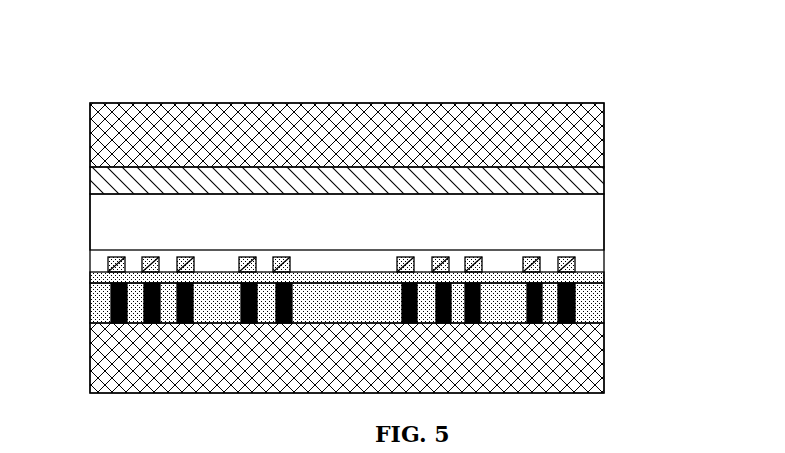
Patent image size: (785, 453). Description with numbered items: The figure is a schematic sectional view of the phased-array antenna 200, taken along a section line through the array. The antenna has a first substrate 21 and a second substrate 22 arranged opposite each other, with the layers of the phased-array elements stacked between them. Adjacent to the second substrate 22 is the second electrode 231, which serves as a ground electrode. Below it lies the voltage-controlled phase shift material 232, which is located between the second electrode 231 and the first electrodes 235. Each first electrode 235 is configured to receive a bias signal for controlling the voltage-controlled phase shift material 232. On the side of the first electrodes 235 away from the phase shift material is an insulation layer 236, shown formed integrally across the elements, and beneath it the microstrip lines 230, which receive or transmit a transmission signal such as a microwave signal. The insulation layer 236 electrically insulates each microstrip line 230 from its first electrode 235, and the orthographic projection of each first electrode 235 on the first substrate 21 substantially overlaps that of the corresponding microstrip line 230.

The phased-array antenna 200 is at (74, 83).
The second substrate 22 is at (604, 135).
The second electrode 231 is at (604, 179).
The voltage-controlled phase shift material 232 is at (604, 225).
The first electrode 235 is at (575, 264).
The insulation layer 236 is at (597, 280).
The microstrip line 230 is at (577, 310).
The first substrate 21 is at (604, 368).